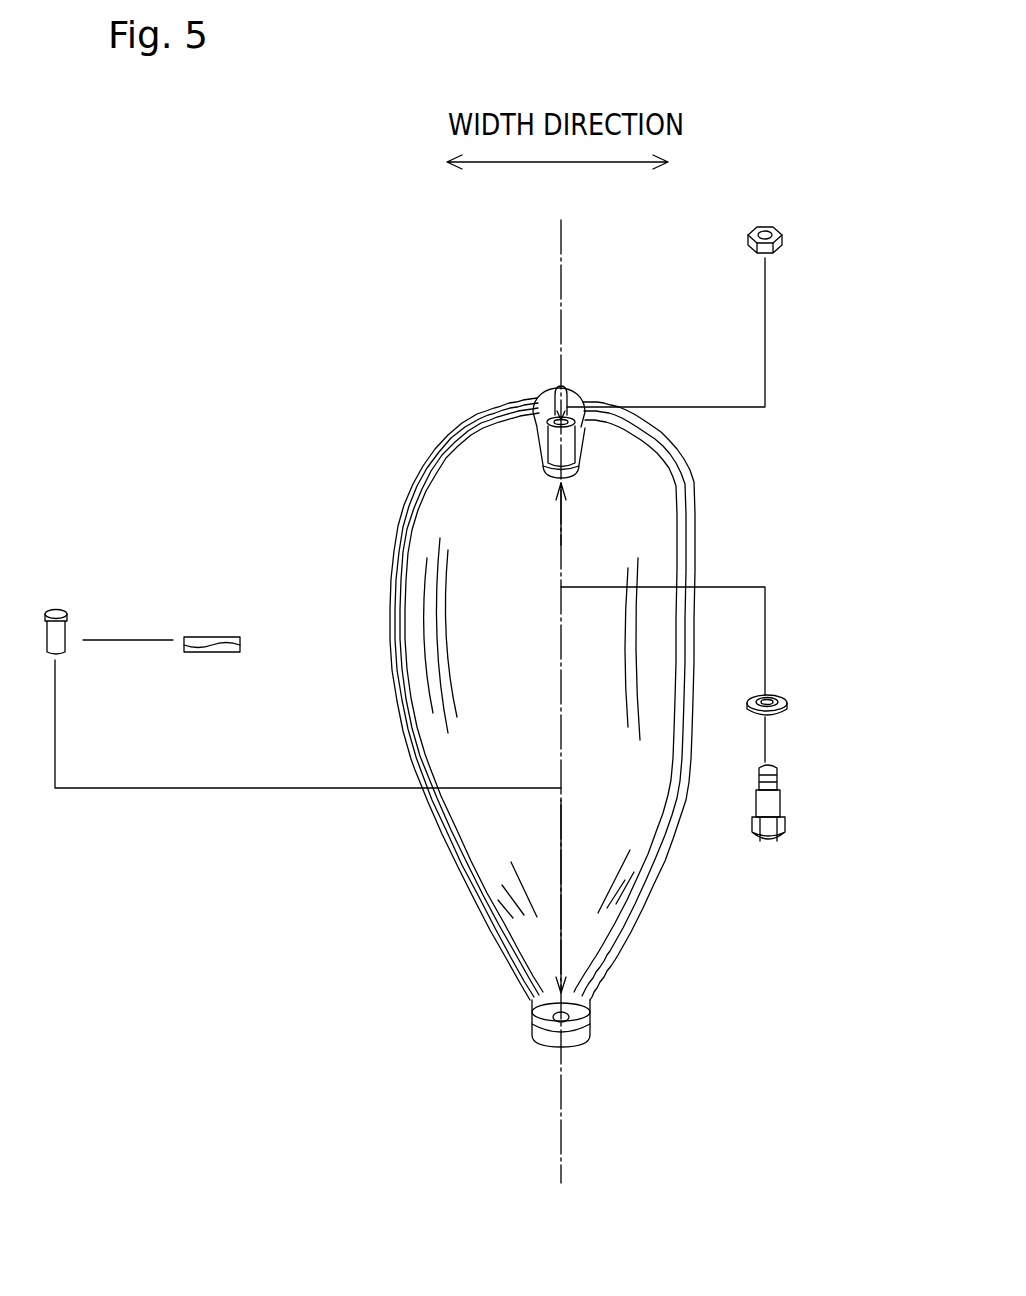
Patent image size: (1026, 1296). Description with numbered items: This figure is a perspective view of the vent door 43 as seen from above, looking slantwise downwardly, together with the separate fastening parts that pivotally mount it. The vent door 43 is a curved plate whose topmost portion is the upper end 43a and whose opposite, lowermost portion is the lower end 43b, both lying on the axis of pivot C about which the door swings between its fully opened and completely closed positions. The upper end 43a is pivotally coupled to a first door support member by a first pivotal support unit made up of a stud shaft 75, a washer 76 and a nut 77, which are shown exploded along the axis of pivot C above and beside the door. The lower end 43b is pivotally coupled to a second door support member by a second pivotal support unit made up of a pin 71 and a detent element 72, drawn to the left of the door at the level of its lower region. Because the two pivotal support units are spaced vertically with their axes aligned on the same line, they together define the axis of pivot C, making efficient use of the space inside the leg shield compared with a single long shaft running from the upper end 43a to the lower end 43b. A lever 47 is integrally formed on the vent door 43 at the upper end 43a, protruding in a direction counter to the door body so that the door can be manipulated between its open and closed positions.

The vent door 43 is at (440, 472).
The upper end 43a is at (572, 425).
The lower end 43b is at (590, 1022).
The lever 47 is at (577, 473).
The pin 71 is at (66, 612).
The detent element 72 is at (241, 639).
The stud shaft 75 is at (770, 810).
The washer 76 is at (787, 701).
The nut 77 is at (782, 240).
The axis of pivot C is at (562, 1078).